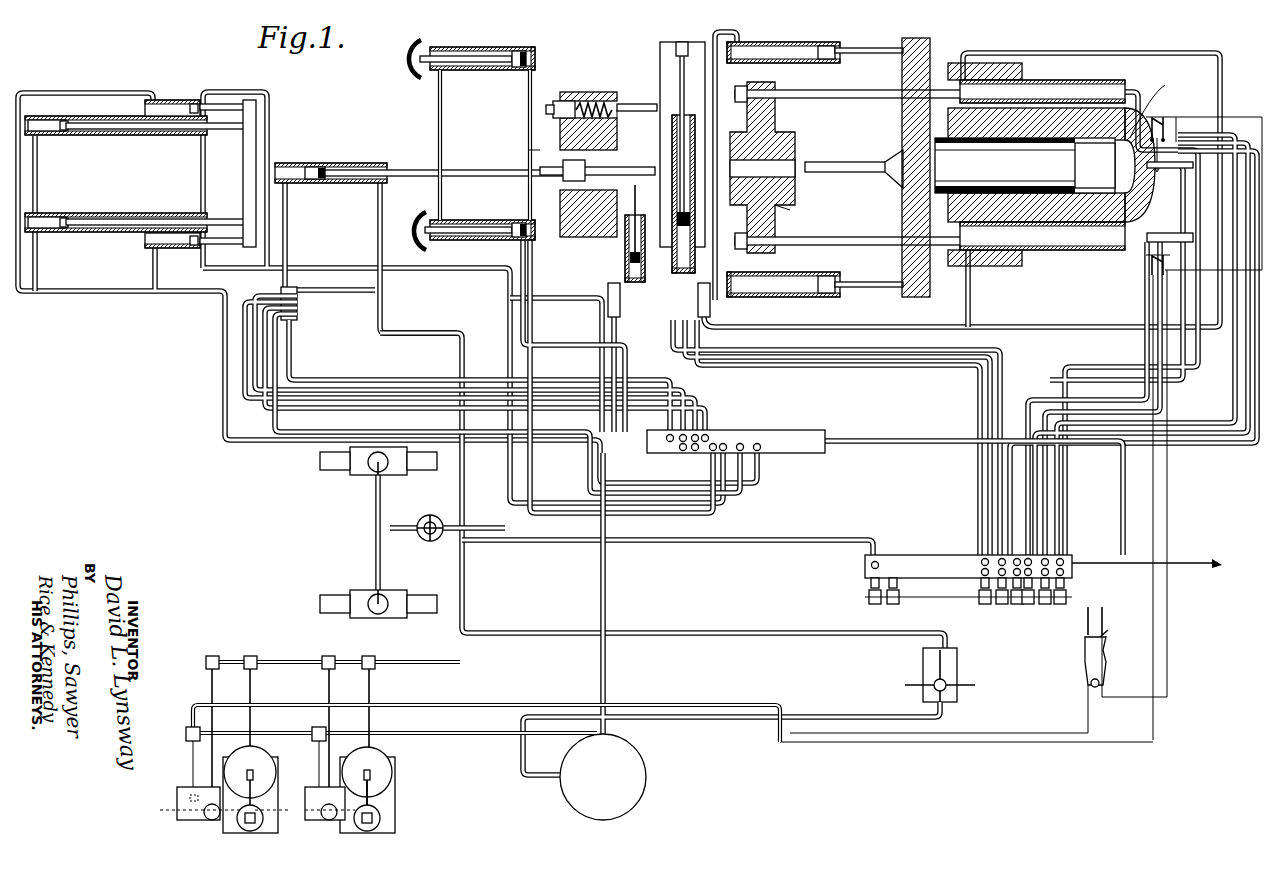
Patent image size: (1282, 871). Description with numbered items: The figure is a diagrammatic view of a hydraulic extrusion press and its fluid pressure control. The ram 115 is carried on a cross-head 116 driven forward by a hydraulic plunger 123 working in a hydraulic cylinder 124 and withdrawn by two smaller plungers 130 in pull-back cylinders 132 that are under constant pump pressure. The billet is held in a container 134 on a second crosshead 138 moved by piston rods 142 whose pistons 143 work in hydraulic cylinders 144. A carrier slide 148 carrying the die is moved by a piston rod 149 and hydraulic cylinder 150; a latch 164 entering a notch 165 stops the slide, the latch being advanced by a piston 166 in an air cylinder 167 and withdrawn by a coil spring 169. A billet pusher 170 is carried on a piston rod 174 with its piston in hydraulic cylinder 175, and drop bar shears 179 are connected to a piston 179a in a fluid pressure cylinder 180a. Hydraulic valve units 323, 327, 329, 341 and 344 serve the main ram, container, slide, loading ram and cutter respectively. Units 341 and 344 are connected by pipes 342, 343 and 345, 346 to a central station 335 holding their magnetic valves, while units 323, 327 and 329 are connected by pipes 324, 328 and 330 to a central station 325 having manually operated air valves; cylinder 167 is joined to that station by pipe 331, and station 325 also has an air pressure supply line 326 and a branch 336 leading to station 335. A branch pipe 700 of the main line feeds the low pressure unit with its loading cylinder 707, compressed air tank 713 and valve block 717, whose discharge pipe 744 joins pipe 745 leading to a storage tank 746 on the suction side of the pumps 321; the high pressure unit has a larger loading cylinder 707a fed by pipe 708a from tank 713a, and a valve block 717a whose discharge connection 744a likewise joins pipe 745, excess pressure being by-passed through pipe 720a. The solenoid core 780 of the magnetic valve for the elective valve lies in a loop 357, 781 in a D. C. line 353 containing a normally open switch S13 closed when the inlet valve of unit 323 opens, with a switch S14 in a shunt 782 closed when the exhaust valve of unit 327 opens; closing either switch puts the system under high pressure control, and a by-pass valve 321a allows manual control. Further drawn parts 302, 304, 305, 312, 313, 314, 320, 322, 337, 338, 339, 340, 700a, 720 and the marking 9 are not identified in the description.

The ram 115 is at (870, 162).
The cross-head 116 is at (928, 44).
The hydraulic plunger 123 is at (1045, 165).
The hydraulic cylinder 124 is at (1163, 103).
The hydraulic plungers 130 is at (876, 48).
The pull-back cylinders 132 is at (796, 44).
The container 134 is at (780, 142).
The crosshead 138 is at (778, 210).
The piston rods 142 is at (878, 90).
The pistons 143 is at (975, 85).
The hydraulic cylinders 144 is at (1100, 74).
The carrier slide 148 is at (697, 45).
The piston rod 149 is at (680, 60).
The hydraulic cylinder 150 is at (674, 112).
The latch 164 is at (638, 103).
The notch 165 is at (622, 113).
The piston 166 is at (565, 100).
The air cylinder 167 is at (552, 92).
The coil spring 169 is at (596, 100).
The billet pusher 170 is at (636, 167).
The piston rod 174 is at (408, 170).
The hydraulic cylinder 175 is at (305, 163).
The drop bar shears 179 is at (636, 205).
The piston 179a is at (628, 258).
The fluid pressure cylinder 180a is at (625, 245).
The plate 302 is at (252, 148).
The cylinder 304 is at (112, 133).
The cylinder 305 is at (171, 99).
The hook 312 is at (414, 72).
The cylinder 313 is at (478, 52).
The piston rod 314 is at (487, 68).
The conduit 320 is at (1205, 372).
The pumps 321 is at (355, 475).
The by-pass valve 321a is at (958, 672).
The conduit 322 is at (458, 361).
The valve unit 323 is at (1180, 168).
The pipes 324 is at (1257, 448).
The central station 325 is at (1068, 556).
The air pressure supply line 326 is at (1205, 558).
The valve unit 327 is at (1162, 233).
The pipes 328 is at (1160, 292).
The valve unit 329 is at (710, 305).
The pipes 330 is at (773, 364).
The pipe 331 is at (866, 538).
The central station 335 is at (826, 434).
The branch 336 is at (935, 432).
The conduit 337 is at (258, 92).
The conduit 338 is at (530, 152).
The conduit 339 is at (103, 93).
The conduit 340 is at (38, 158).
The valve unit 341 is at (297, 308).
The pipes 342 is at (263, 434).
The pipes 343 is at (313, 394).
The valve unit 344 is at (608, 290).
The pipes 345 is at (570, 310).
The pipes 346 is at (575, 347).
The D. C. line 353 is at (1090, 620).
The loop 357 is at (1018, 736).
The branch pipe 700 is at (250, 656).
The shaft 700a is at (372, 705).
The loading cylinder 707 is at (262, 808).
The loading cylinder 707a is at (380, 816).
The pipe 708a is at (375, 798).
The tank 713 is at (258, 756).
The tank 713a is at (390, 770).
The valve block 717 is at (208, 823).
The valve block 717a is at (325, 812).
The lever 720 is at (211, 678).
The pipe 720a is at (330, 692).
The discharge pipe 744 is at (190, 738).
The discharge connection 744a is at (315, 765).
The pipe 745 is at (487, 731).
The storage tank 746 is at (642, 798).
The solenoid core 780 is at (195, 790).
The loop 781 is at (970, 742).
The shunt 782 is at (1150, 276).
The normally open switch S13 is at (1160, 117).
The normally open switch S14 is at (1147, 262).
The section line 9 is at (224, 807).